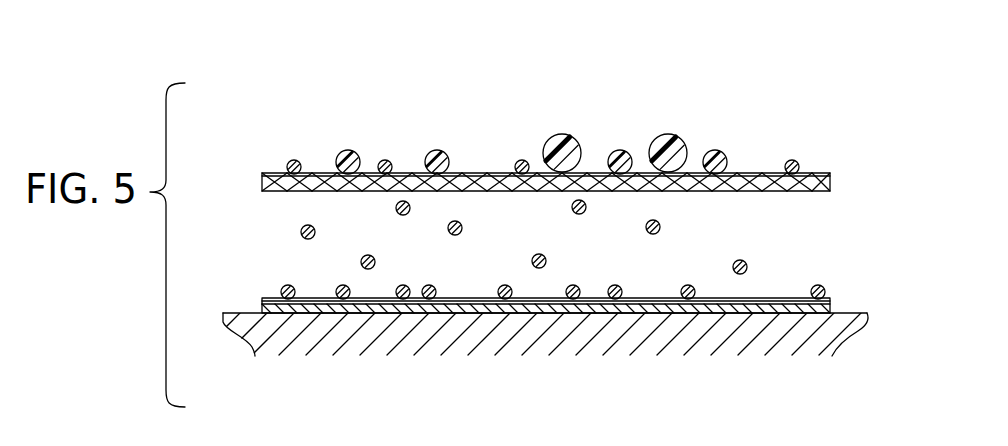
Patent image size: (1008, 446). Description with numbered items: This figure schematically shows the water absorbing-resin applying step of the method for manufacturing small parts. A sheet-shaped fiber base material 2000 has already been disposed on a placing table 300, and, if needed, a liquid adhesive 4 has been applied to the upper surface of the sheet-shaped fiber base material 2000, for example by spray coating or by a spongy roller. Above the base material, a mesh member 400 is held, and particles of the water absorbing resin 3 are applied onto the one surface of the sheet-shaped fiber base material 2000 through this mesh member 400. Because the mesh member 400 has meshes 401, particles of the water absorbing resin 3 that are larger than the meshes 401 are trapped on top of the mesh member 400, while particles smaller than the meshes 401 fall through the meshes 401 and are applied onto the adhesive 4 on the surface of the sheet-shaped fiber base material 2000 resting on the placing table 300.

The water absorbing resin 3 is at (519, 159).
The adhesive 4 is at (773, 300).
The mesh member 400 is at (815, 173).
The meshes 401 is at (763, 182).
The sheet-shaped fiber base material 2000 is at (266, 306).
The placing table 300 is at (856, 313).